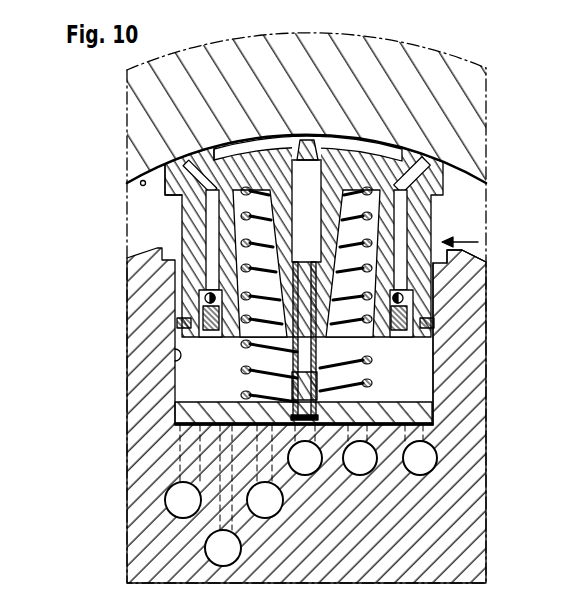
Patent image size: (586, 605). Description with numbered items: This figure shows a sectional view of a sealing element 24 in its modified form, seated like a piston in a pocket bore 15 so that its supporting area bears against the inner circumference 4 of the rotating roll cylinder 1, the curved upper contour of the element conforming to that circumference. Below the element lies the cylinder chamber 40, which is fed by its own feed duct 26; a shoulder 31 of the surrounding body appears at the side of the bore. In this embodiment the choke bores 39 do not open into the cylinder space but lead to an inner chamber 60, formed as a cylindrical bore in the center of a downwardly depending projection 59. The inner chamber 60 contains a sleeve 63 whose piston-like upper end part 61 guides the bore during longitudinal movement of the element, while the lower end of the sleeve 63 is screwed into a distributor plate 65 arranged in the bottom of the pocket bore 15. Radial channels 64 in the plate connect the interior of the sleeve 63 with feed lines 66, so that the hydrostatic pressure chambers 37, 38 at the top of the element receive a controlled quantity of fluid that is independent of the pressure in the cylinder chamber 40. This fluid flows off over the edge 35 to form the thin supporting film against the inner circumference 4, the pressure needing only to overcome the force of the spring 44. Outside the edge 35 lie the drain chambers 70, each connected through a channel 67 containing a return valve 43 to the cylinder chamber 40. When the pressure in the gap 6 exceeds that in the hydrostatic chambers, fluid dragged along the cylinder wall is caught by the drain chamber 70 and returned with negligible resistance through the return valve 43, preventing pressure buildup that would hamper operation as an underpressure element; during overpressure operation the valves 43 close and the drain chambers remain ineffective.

The roll cylinder 1 is at (474, 88).
The inner circumference 4 is at (143, 181).
The gap 6 is at (147, 204).
The pocket bore 15 is at (176, 360).
The element 24 is at (478, 240).
The feed duct 26 is at (262, 513).
The shoulder 31 is at (468, 262).
The edge 35 is at (414, 158).
The hydrostatic pressure chamber 37 is at (268, 137).
The hydrostatic pressure chamber 38 is at (363, 140).
The choke bore 39 is at (309, 135).
The cylinder chamber 40 is at (417, 354).
The return valve 43 is at (410, 308).
The spring 44 is at (238, 370).
The downwardly depending projection 59 is at (300, 277).
The inner chamber 60 is at (325, 175).
The piston-like upper end part 61 is at (302, 249).
The sleeve 63 is at (240, 345).
The radial channel 64 is at (390, 401).
The distributor plate 65 is at (425, 408).
The feed line 66 is at (422, 473).
The channel 67 is at (407, 228).
The drain chamber 70 is at (430, 160).